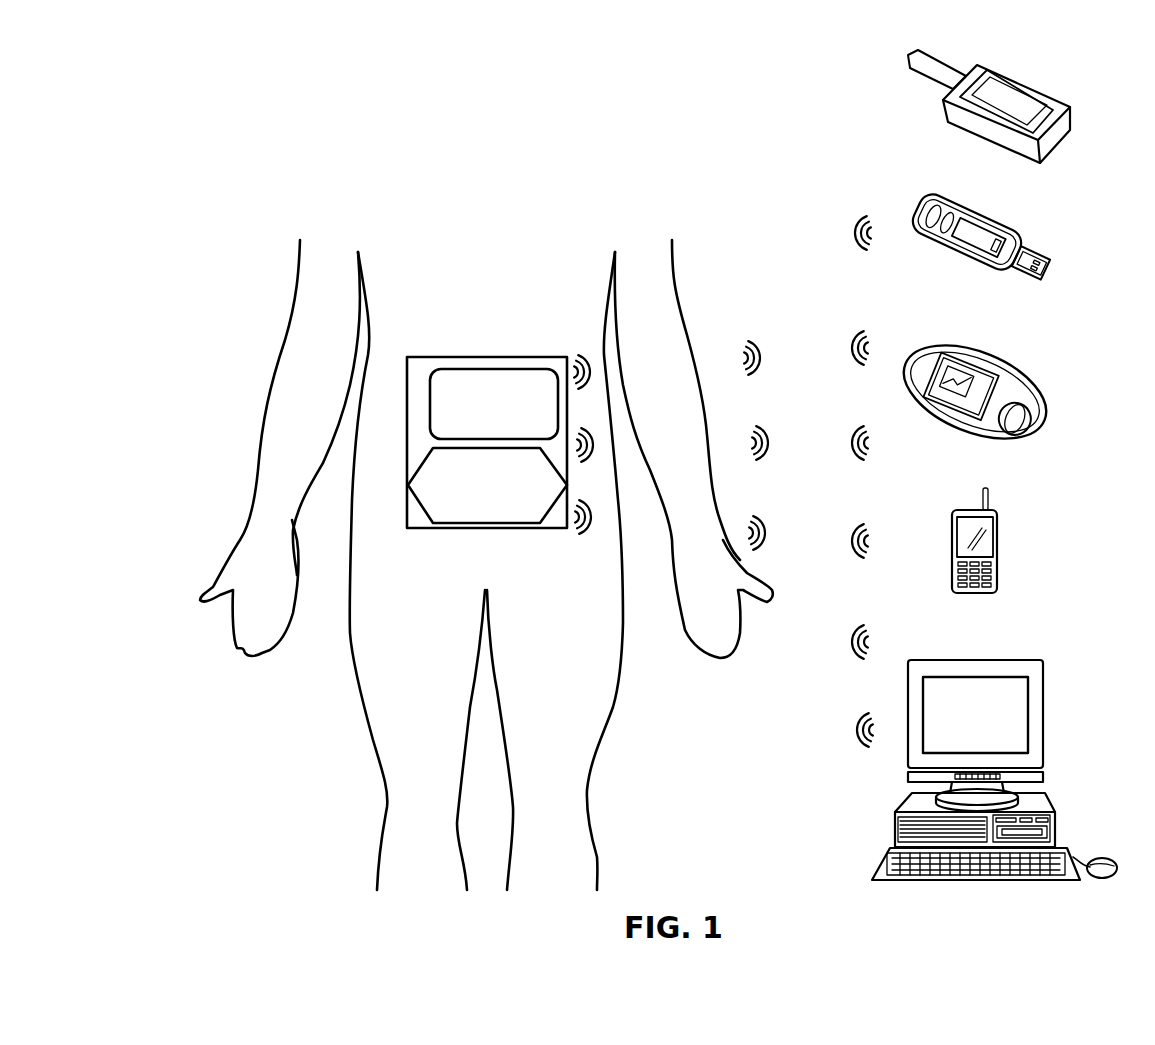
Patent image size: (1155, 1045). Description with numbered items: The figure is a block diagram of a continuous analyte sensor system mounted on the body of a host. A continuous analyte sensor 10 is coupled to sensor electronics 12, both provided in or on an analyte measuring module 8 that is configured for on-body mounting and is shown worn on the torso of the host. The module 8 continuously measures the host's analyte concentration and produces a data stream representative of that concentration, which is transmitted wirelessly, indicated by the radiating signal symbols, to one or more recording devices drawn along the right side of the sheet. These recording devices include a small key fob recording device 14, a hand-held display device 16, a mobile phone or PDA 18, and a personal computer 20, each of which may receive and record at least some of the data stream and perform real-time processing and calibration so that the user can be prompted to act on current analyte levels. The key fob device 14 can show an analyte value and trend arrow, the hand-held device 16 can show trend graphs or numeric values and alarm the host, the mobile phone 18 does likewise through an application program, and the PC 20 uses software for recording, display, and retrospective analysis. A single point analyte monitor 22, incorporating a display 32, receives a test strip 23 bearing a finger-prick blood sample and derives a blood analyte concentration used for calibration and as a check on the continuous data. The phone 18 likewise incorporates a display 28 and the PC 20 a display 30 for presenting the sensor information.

The analyte measuring module 8 is at (445, 357).
The continuous analyte sensor 10 is at (430, 526).
The sensor electronics 12 is at (465, 369).
The key fob recording device 14 is at (1020, 233).
The hand-held display device 16 is at (1011, 383).
The mobile phone or PDA 18 is at (1018, 529).
The personal computer 20 is at (1006, 746).
The single point analyte monitor 22 is at (1019, 98).
The test strip 23 is at (935, 67).
The display 28 is at (983, 547).
The display 30 is at (1018, 718).
The display 32 is at (1038, 112).